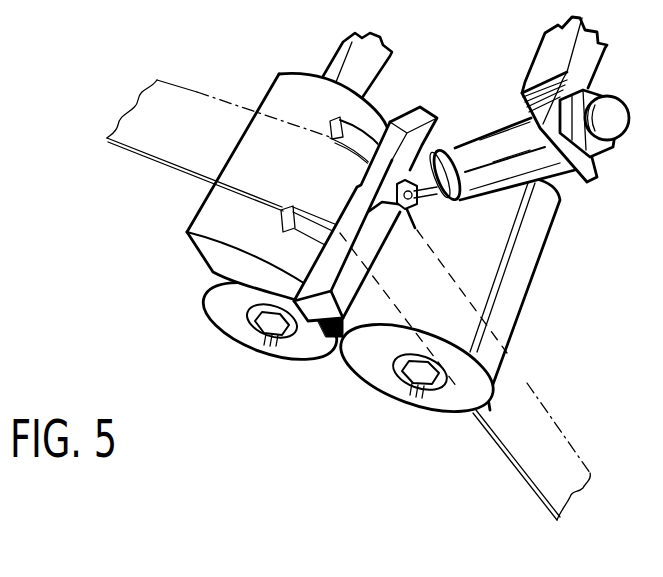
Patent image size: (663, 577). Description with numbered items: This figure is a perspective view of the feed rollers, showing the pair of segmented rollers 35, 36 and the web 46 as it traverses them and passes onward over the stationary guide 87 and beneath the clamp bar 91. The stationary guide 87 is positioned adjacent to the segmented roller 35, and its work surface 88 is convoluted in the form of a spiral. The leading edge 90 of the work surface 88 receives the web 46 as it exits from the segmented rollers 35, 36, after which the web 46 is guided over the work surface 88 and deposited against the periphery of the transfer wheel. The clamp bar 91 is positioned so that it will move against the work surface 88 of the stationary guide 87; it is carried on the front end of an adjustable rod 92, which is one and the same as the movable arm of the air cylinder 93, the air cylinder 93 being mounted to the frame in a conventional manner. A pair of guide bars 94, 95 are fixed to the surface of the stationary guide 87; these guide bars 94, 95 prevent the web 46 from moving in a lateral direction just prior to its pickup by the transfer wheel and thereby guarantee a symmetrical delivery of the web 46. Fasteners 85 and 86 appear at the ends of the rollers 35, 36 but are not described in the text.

The segmented roller 35 is at (163, 338).
The segmented roller 36 is at (413, 392).
The web 46 is at (185, 88).
The flange washer 85 is at (318, 372).
The bolt head 86 is at (427, 410).
The stationary guide 87 is at (280, 73).
The work surface 88 is at (307, 171).
The leading edge 90 is at (330, 327).
The clamp bar 91 is at (415, 104).
The adjustable rod 92 is at (430, 196).
The air cylinder 93 is at (498, 150).
The guide bar 94 is at (281, 220).
The guide bar 95 is at (338, 120).